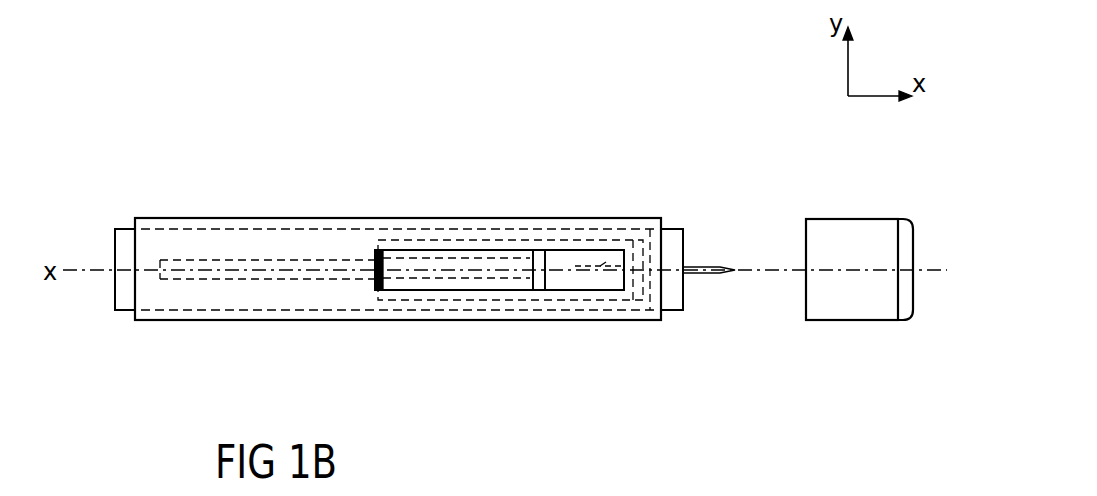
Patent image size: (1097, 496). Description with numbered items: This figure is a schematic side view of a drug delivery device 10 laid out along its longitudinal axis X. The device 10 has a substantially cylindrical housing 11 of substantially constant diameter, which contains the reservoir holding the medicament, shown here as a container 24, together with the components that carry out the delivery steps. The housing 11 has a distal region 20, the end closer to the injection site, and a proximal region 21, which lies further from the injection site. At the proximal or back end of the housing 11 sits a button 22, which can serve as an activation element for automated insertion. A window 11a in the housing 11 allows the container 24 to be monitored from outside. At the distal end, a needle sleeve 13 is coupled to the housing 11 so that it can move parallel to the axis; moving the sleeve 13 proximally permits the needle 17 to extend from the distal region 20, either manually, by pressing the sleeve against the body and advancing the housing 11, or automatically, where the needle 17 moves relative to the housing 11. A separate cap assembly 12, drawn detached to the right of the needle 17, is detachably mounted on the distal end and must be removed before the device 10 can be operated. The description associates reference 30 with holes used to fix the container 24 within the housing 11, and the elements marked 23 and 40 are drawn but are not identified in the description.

The drug delivery device 10 is at (648, 168).
The housing 11 is at (604, 222).
The window 11a is at (433, 248).
The cap assembly 12 is at (863, 235).
The needle sleeve 13 is at (676, 228).
The needle 17 is at (735, 268).
The distal region 20 is at (655, 320).
The proximal region 21 is at (138, 322).
The button 22 is at (125, 232).
The stopper 23 is at (540, 292).
The container 24 is at (565, 262).
The holes 30 is at (253, 257).
The syringe 40 is at (503, 250).